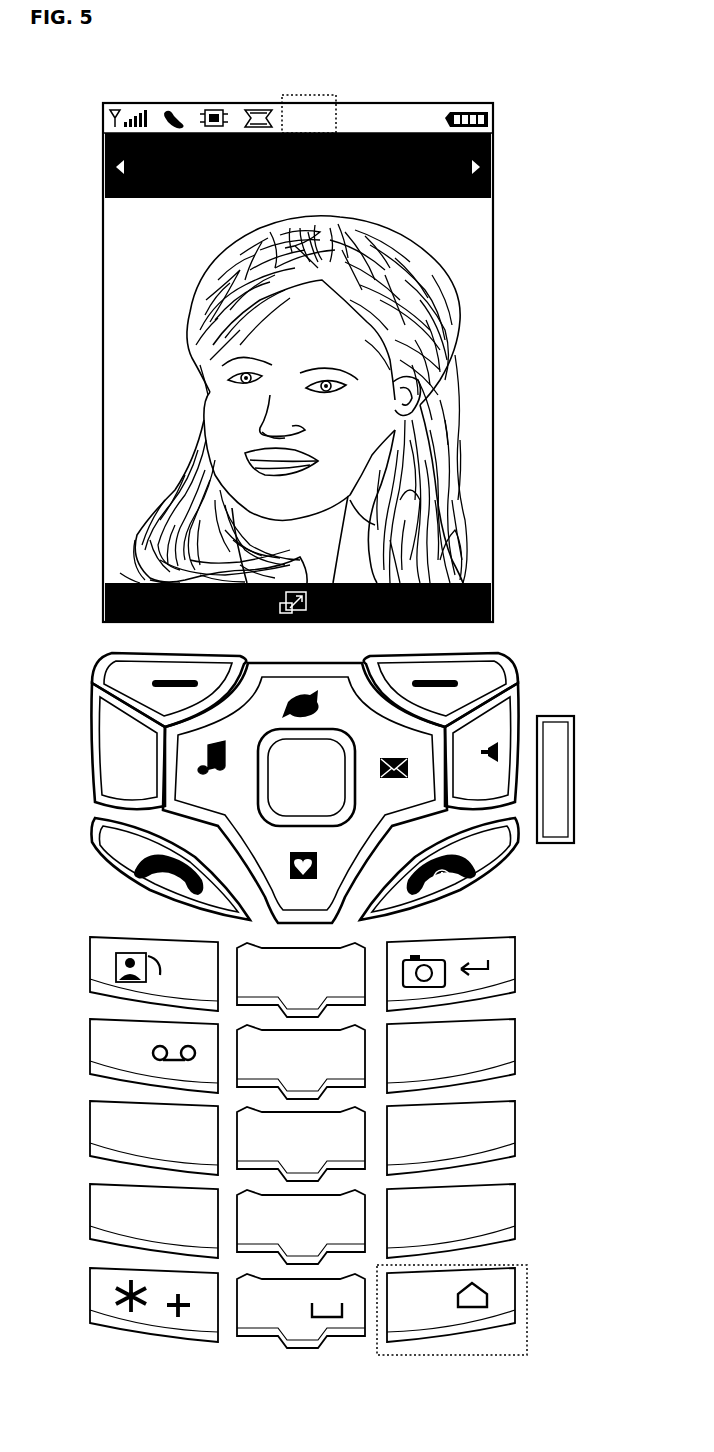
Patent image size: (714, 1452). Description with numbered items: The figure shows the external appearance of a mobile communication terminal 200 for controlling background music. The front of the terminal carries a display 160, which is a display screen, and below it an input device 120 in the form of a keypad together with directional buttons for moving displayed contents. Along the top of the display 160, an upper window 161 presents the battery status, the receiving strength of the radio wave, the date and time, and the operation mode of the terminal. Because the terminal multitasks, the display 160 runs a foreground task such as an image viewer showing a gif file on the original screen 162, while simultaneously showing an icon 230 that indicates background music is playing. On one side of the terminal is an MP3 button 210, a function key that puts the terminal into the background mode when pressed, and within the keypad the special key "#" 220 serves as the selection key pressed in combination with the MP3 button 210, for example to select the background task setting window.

The mobile communication terminal 200 is at (587, 73).
The display 160 is at (93, 440).
The upper window 161 is at (430, 106).
The original screen 162 is at (486, 240).
The icon 230 is at (300, 94).
The MP3 button 210 is at (558, 716).
The input device 120 is at (87, 912).
The special key "#" 220 is at (525, 1264).